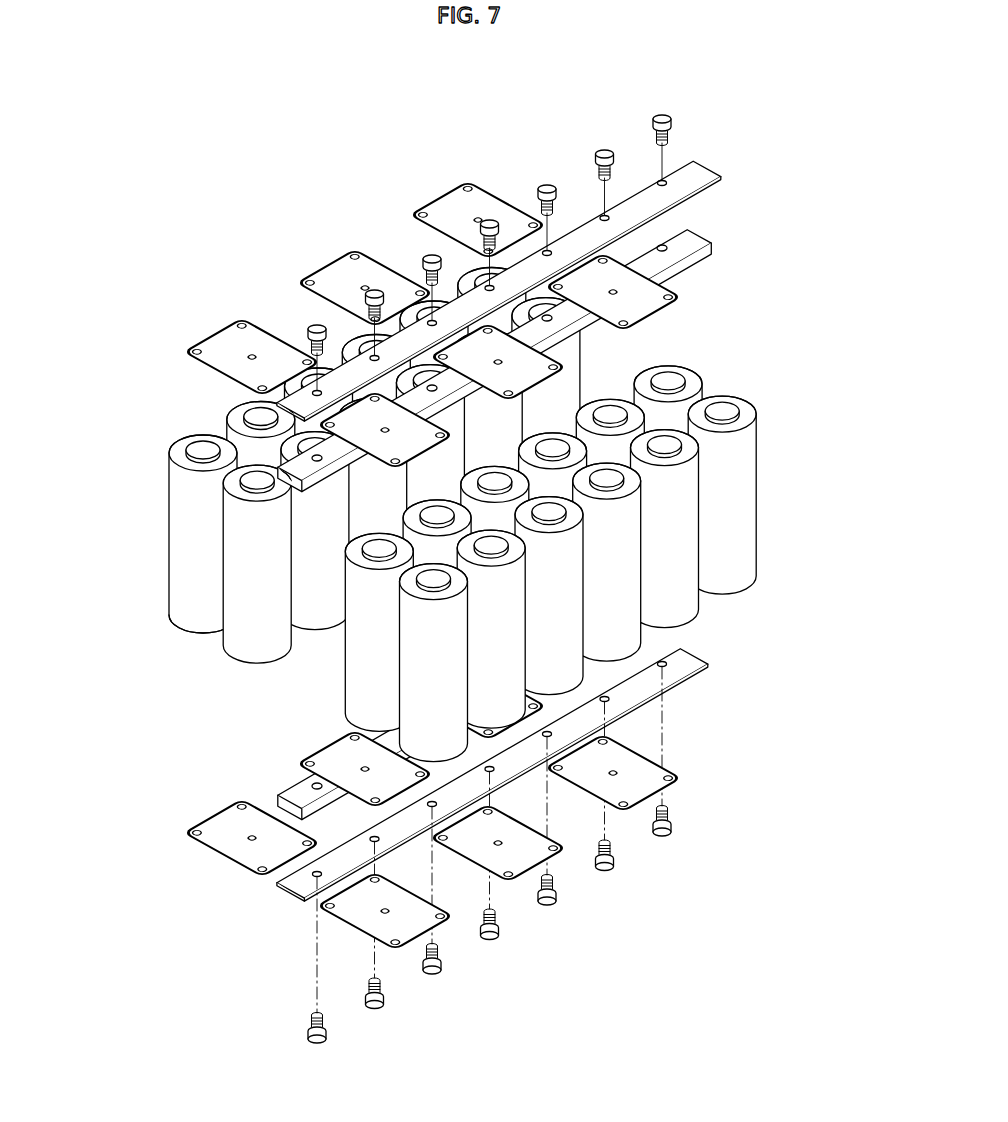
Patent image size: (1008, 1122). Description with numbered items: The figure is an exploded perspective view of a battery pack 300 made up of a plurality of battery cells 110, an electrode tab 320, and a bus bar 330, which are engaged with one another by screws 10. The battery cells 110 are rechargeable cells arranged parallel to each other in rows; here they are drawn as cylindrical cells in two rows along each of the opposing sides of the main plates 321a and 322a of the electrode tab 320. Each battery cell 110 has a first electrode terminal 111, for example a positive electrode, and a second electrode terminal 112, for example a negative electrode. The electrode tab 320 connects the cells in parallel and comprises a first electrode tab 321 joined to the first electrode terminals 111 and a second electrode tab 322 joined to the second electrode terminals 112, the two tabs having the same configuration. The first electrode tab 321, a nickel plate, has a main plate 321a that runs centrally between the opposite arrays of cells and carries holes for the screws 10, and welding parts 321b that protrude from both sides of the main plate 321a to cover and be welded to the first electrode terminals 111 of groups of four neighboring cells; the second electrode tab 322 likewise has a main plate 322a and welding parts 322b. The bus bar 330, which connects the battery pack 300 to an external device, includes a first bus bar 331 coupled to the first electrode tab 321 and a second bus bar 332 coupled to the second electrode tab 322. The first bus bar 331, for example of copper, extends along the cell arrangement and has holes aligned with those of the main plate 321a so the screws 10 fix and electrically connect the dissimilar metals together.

The screw 10 is at (663, 111).
The battery cell 110 is at (167, 560).
The first electrode terminal 111 is at (205, 457).
The second electrode terminal 112 is at (190, 637).
The battery pack 300 is at (176, 94).
The electrode tab 320 is at (551, 583).
The first electrode tab 321 is at (516, 311).
The main plate 321a is at (694, 164).
The welding part 321b is at (670, 292).
The second electrode tab 322 is at (516, 816).
The main plate 322a is at (684, 641).
The welding part 322b is at (643, 747).
The bus bar 330 is at (368, 525).
The first bus bar 331 is at (288, 463).
The second bus bar 332 is at (401, 689).